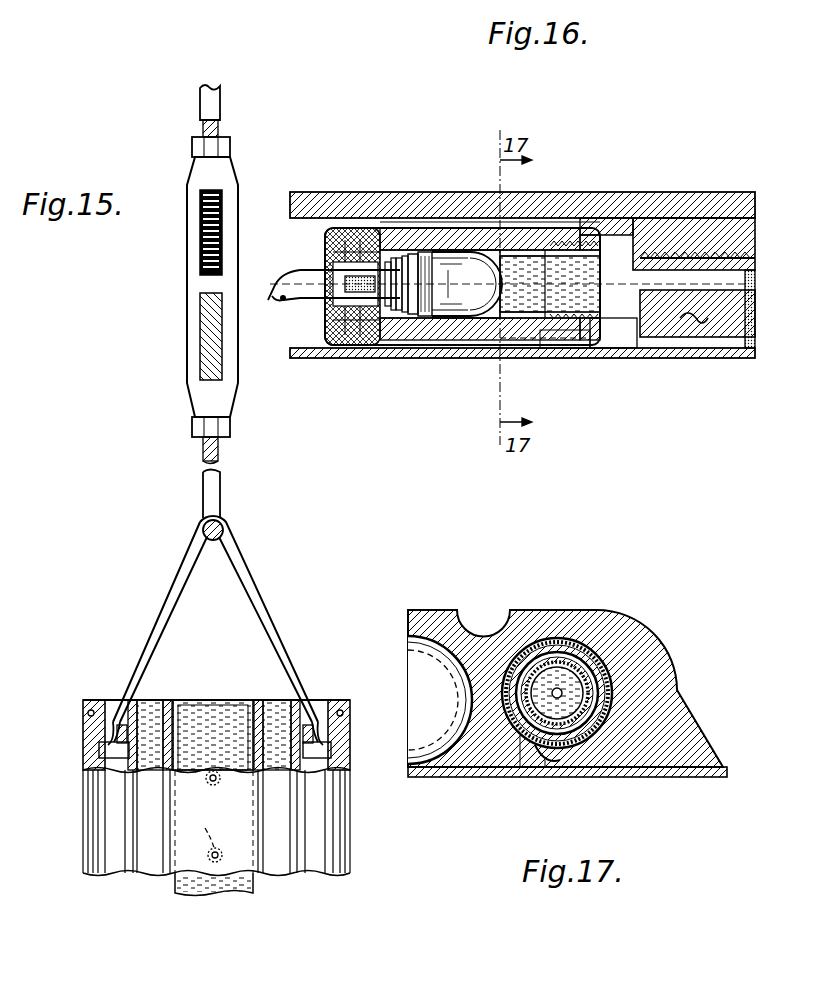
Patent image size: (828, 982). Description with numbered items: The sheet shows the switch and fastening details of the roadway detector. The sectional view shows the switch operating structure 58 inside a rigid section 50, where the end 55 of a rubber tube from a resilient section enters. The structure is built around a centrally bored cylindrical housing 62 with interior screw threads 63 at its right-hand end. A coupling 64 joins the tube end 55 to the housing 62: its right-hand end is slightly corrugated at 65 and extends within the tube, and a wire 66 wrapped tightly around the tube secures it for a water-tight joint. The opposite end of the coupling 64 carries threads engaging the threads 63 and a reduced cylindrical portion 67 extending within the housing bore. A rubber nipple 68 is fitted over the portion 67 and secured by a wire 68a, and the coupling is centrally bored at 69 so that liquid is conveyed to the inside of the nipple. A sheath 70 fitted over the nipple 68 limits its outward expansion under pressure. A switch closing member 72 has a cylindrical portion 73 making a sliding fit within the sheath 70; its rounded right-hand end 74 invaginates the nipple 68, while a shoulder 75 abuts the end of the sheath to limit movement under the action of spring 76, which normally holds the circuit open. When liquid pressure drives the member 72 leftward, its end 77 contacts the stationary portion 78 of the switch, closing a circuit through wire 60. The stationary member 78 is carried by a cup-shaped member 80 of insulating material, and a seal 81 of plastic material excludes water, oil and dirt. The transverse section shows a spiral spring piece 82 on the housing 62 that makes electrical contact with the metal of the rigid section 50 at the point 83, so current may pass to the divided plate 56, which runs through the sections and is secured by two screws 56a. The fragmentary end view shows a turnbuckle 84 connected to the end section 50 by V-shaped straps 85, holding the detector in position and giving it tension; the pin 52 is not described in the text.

In FIG. 16, the rigid section 50 is at (648, 190).
In FIG. 15, the rigid section 50 is at (82, 812).
In FIG. 17, the rigid section 50 is at (675, 656).
In FIG. 16, the connector pin 52 is at (305, 290).
In FIG. 16, the end of rubber tube 55 is at (697, 253).
In FIG. 15, the divided plate 56 is at (217, 720).
In FIG. 15, the screws 56a is at (210, 784).
In FIG. 16, the switch operating structure 58 is at (440, 310).
In FIG. 16, the wire 60 is at (283, 296).
In FIG. 16, the cylindrical housing 62 is at (433, 230).
In FIG. 17, the cylindrical housing 62 is at (598, 660).
In FIG. 16, the interior screw threads 63 is at (578, 248).
In FIG. 16, the coupling 64 is at (610, 243).
In FIG. 16, the corrugated portion 65 is at (717, 300).
In FIG. 16, the wire 66 is at (677, 223).
In FIG. 16, the reduced cylindrical portion 67 is at (570, 233).
In FIG. 17, the reduced cylindrical portion 67 is at (568, 707).
In FIG. 16, the rubber nipple 68 is at (528, 352).
In FIG. 17, the rubber nipple 68 is at (530, 670).
In FIG. 16, the wire 68a is at (533, 220).
In FIG. 16, the central bore 69 is at (620, 313).
In FIG. 17, the central bore 69 is at (557, 693).
In FIG. 16, the sheath 70 is at (467, 330).
In FIG. 17, the sheath 70 is at (580, 673).
In FIG. 16, the switch closing member 72 is at (427, 305).
In FIG. 16, the cylindrical portion 73 is at (410, 312).
In FIG. 16, the rounded end 74 is at (457, 340).
In FIG. 16, the shoulder 75 is at (405, 325).
In FIG. 16, the spring 76 is at (405, 260).
In FIG. 16, the end of switch closing member 77 is at (395, 317).
In FIG. 16, the stationary portion of switch 78 is at (387, 263).
In FIG. 16, the cup-shaped member 80 is at (322, 242).
In FIG. 16, the seal 81 is at (325, 256).
In FIG. 16, the spiral spring piece 82 is at (487, 218).
In FIG. 17, the spiral spring piece 82 is at (537, 640).
In FIG. 16, the contact point 83 is at (537, 358).
In FIG. 17, the contact point 83 is at (547, 760).
In FIG. 15, the turnbuckle 84 is at (197, 355).
In FIG. 15, the V-shaped straps 85 is at (277, 622).